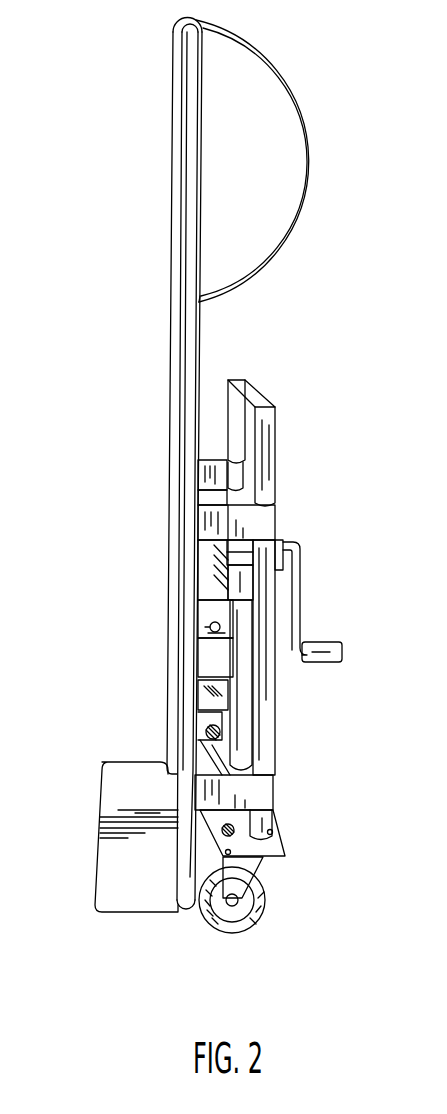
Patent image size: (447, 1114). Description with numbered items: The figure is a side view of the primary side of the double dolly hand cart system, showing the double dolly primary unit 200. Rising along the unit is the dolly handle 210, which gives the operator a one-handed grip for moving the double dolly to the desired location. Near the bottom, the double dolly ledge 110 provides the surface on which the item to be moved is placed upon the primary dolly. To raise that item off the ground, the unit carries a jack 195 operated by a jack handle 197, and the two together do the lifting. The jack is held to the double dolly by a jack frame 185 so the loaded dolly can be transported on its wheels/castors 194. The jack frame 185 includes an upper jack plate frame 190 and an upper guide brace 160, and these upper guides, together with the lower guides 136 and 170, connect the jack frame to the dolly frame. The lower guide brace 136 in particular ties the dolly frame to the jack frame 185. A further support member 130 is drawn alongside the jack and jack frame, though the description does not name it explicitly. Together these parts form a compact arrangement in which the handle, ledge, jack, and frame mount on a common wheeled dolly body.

The double dolly ledge 110 is at (118, 860).
The support member 130 is at (223, 762).
The lower guide brace 136 is at (202, 692).
The upper guide brace 160 is at (269, 522).
The lower guide 170 is at (274, 804).
The jack frame 185 is at (259, 386).
The upper jack plate frame 190 is at (248, 465).
The wheels/castors 194 is at (254, 911).
The jack 195 is at (254, 720).
The jack handle 197 is at (343, 646).
The double dolly primary unit 200 is at (300, 853).
The dolly handle 210 is at (314, 156).